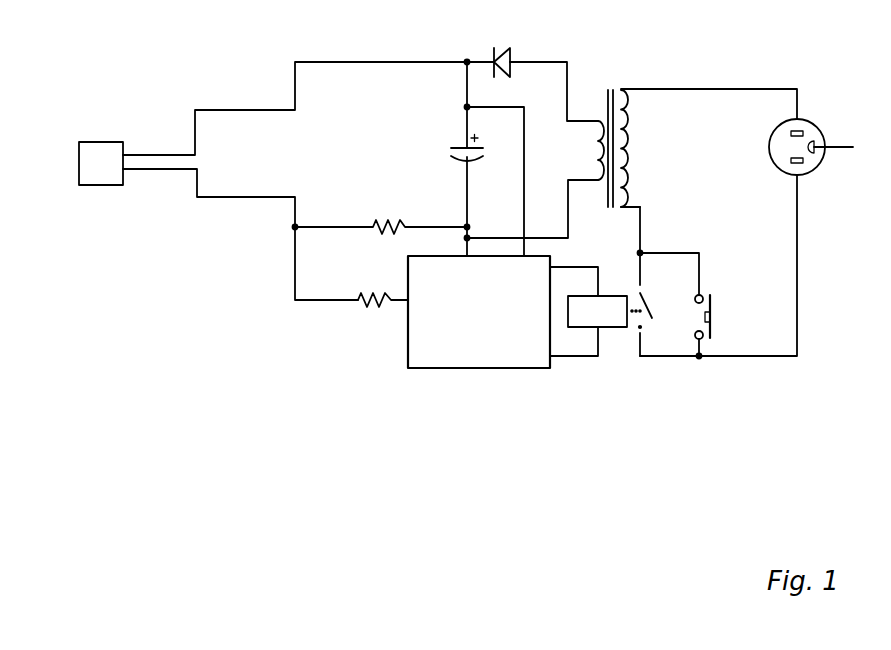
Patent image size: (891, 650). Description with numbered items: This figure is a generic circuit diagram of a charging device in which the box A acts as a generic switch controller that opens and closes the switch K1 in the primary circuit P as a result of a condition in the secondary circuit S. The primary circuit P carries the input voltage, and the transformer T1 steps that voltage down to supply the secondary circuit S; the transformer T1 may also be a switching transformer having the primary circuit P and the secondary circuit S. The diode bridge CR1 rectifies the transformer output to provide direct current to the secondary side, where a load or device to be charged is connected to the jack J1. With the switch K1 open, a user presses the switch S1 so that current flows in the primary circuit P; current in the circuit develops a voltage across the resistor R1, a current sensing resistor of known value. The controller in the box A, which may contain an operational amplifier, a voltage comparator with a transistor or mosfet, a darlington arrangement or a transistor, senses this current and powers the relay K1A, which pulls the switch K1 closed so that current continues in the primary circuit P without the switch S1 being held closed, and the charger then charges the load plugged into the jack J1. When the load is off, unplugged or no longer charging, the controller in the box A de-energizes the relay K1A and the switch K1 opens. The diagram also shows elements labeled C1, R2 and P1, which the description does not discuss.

The jack J1 is at (273, 181).
The secondary circuit S is at (352, 63).
The diode bridge CR1 is at (489, 55).
The capacitor C1 is at (472, 148).
The resistor R1 is at (381, 220).
The resistor R2 is at (380, 293).
The box A is at (479, 312).
The transformer T1 is at (617, 140).
The primary circuit P is at (710, 89).
The receptacle P1 is at (811, 140).
The relay K1A is at (588, 311).
The switch K1 is at (665, 281).
The switch S1 is at (720, 327).